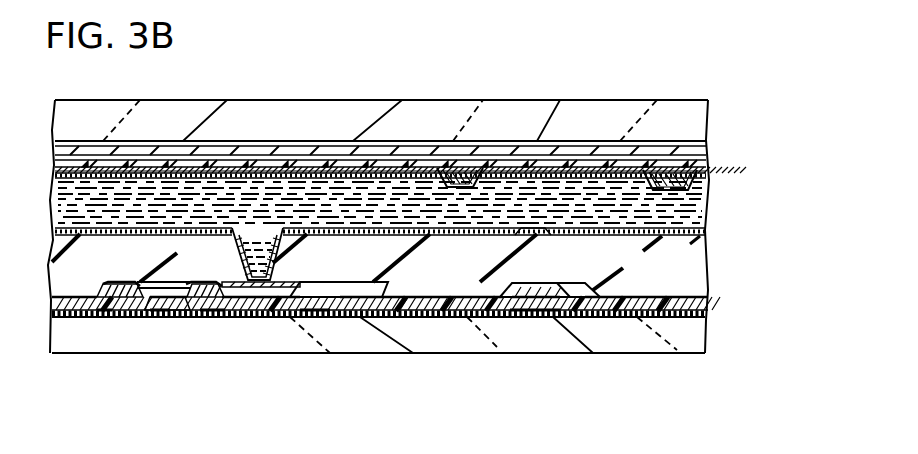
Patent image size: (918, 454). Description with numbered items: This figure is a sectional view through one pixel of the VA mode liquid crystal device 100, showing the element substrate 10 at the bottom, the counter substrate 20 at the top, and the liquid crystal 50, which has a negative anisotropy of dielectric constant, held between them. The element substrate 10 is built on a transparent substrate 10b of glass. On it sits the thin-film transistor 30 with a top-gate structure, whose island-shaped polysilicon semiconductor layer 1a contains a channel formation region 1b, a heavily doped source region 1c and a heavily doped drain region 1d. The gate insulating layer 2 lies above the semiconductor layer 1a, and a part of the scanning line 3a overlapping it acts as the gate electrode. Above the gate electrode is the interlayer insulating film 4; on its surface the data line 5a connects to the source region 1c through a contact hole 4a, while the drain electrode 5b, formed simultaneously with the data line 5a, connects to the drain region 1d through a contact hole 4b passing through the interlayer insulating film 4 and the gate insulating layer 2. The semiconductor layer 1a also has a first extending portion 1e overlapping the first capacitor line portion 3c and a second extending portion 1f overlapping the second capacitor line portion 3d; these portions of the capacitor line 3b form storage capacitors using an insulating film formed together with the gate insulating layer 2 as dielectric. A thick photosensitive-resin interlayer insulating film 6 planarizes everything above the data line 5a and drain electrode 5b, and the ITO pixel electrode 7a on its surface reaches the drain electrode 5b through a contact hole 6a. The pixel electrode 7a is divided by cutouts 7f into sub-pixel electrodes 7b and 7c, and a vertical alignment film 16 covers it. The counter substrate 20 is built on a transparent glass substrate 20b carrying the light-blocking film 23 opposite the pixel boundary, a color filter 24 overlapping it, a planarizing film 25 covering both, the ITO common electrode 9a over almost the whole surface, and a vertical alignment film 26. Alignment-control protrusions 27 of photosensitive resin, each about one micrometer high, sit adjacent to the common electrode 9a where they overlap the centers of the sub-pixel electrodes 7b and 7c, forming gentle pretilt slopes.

The liquid crystal device 100 is at (655, 68).
The counter substrate 20 is at (773, 102).
The transparent substrate 20b is at (718, 102).
The light-blocking film 23 is at (257, 141).
The color filter 24 is at (558, 150).
The planarizing film 25 is at (497, 155).
The alignment film 26 is at (313, 175).
The alignment-control protrusion 27 is at (458, 168).
The common electrode 9a is at (349, 172).
The liquid crystal 50 is at (718, 174).
The alignment film 16 is at (408, 232).
The contact hole 6a is at (270, 226).
The cutout 7f is at (553, 237).
The interlayer insulating film 6 is at (718, 236).
The pixel electrode 7a is at (608, 265).
The sub-pixel electrode 7b is at (507, 235).
The sub-pixel electrode 7c is at (682, 251).
The interlayer insulating film 4 is at (710, 300).
The gate insulating layer 2 is at (710, 317).
The element substrate 10 is at (773, 352).
The transparent substrate 10b is at (718, 322).
The contact hole 4a is at (107, 286).
The data line 5a is at (117, 283).
The scanning line 3a is at (161, 279).
The drain electrode 5b is at (195, 281).
The contact hole 4b is at (219, 283).
The semiconductor layer 1a is at (180, 322).
The channel formation region 1b is at (163, 322).
The source region 1c is at (125, 322).
The drain region 1d is at (207, 320).
The first extending portion 1e is at (315, 320).
The second extending portion 1f is at (533, 318).
The thin-film transistor 30 is at (140, 323).
The capacitor line 3b is at (415, 401).
The first capacitor line portion 3c is at (373, 318).
The second capacitor line portion 3d is at (527, 318).